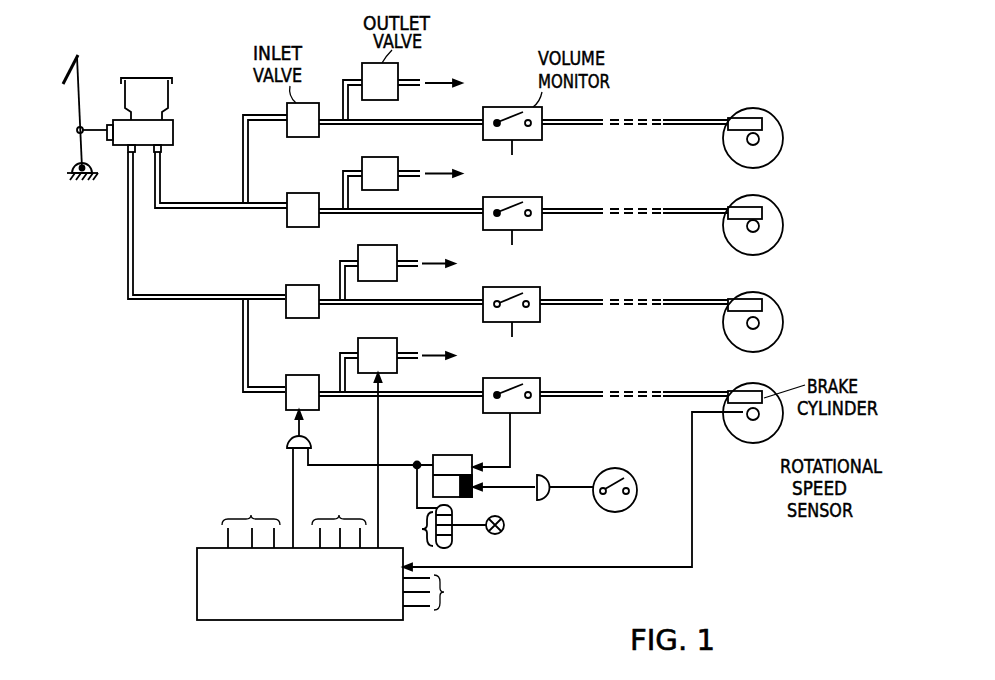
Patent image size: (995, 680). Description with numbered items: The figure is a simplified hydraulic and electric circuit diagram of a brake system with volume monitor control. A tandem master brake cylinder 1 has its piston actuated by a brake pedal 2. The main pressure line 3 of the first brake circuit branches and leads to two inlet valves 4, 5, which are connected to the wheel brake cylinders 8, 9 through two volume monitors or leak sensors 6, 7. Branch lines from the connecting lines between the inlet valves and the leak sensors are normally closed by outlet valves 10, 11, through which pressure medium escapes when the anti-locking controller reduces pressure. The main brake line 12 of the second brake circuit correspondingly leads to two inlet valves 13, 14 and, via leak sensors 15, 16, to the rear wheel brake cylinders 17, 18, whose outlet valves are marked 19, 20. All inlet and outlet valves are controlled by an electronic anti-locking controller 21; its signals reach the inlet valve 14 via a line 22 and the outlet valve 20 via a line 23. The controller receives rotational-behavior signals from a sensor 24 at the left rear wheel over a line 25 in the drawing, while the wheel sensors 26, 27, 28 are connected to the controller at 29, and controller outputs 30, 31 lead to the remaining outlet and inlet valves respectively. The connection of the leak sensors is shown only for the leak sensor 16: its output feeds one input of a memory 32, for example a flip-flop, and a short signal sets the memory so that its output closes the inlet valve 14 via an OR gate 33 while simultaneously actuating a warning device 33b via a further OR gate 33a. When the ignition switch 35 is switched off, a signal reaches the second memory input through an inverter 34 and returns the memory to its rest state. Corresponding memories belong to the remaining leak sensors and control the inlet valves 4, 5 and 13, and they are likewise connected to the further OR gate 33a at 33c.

The tandem master brake cylinder 1 is at (173, 133).
The brake pedal 2 is at (80, 98).
The main pressure line 3 is at (198, 209).
The inlet valve 4 is at (303, 120).
The inlet valve 5 is at (303, 210).
The volume monitor (leak sensor) 6 is at (494, 107).
The volume monitor (leak sensor) 7 is at (495, 197).
The wheel brake cylinder 8 is at (736, 120).
The wheel brake cylinder 9 is at (736, 208).
The outlet valve 10 is at (412, 81).
The outlet valve 11 is at (412, 173).
The main brake line 12 is at (180, 300).
The inlet valve 13 is at (302, 301).
The inlet valve 14 is at (302, 392).
The leak sensor 15 is at (490, 287).
The leak sensor 16 is at (490, 378).
The wheel brake cylinder 17 is at (736, 300).
The wheel brake cylinder 18 is at (736, 393).
The outlet valve 19 is at (406, 263).
The outlet valve 20 is at (406, 355).
The electronic anti-locking controller 21 is at (197, 566).
The line 22 is at (293, 470).
The line 23 is at (378, 422).
The sensor 24 is at (754, 420).
The sensor signal line 25 is at (578, 568).
The wheel sensor 26 is at (755, 329).
The wheel sensor 27 is at (755, 232).
The wheel sensor 28 is at (755, 145).
The controller sensor inputs 29 is at (439, 592).
The controller outputs 30 is at (339, 521).
The controller outputs 31 is at (251, 521).
The memory 32 is at (442, 462).
The OR gate 33 is at (311, 441).
The further OR gate 33a is at (454, 542).
The warning device 33b is at (504, 533).
The OR gate inputs 33c is at (408, 529).
The inverter 34 is at (544, 500).
The ignition switch 35 is at (631, 506).